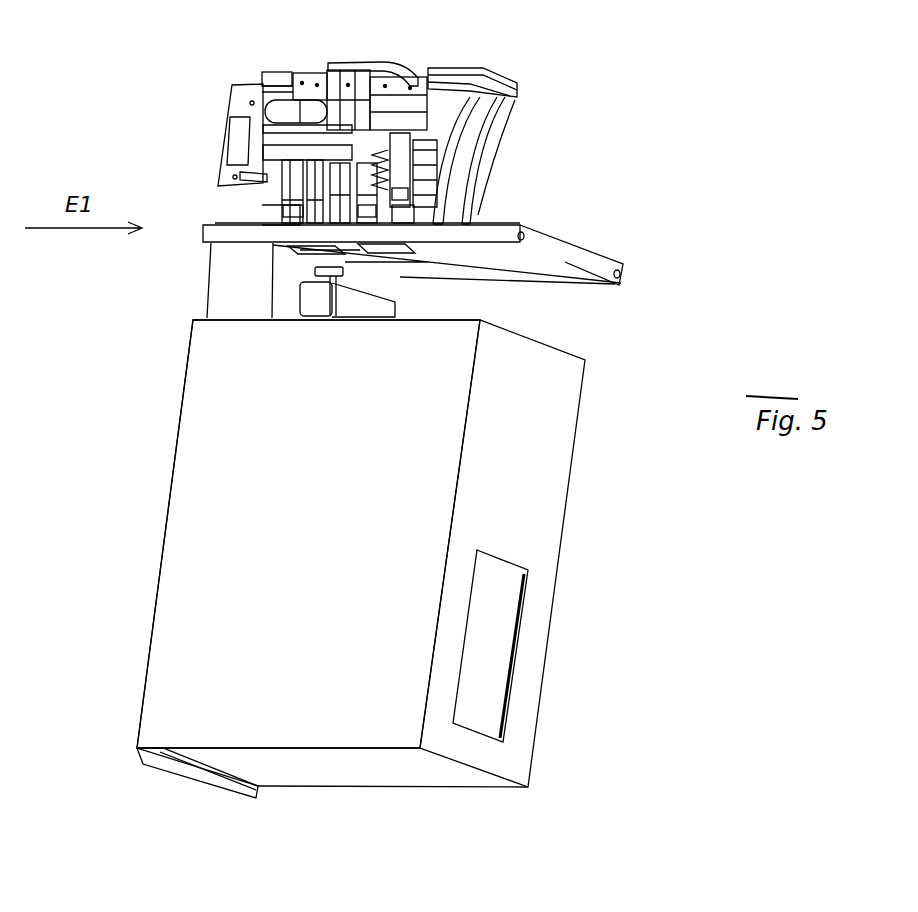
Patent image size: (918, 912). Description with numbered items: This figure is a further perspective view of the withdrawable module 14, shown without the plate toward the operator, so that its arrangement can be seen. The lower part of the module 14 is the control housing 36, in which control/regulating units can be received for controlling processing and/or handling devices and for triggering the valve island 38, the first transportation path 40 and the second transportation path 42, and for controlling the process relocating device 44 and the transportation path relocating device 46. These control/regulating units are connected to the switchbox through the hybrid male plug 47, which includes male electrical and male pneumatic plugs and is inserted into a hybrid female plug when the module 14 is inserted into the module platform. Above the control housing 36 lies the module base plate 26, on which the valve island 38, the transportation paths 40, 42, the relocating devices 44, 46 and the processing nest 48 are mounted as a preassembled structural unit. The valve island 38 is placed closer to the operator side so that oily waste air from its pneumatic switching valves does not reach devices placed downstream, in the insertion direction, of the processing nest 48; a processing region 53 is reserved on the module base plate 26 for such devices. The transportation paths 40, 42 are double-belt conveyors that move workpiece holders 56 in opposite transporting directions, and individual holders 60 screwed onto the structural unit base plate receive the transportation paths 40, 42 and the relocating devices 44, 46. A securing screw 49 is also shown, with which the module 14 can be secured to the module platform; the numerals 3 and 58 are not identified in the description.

The device 3 is at (128, 560).
The withdrawable module 14 is at (545, 497).
The module base plate 26 is at (597, 260).
The control housing 36 is at (314, 562).
The valve island 38 is at (240, 100).
The first transportation path 40 is at (352, 88).
The second transportation path 42 is at (285, 73).
The process relocating device 44 is at (420, 182).
The transportation path relocating device 46 is at (322, 187).
The hybrid male plug 47 is at (373, 313).
The processing nest 48 is at (467, 132).
The securing screw 49 is at (275, 247).
The processing region 53 is at (562, 228).
The workpiece holders 56 is at (393, 75).
The rail plate 58 is at (517, 87).
The individual holders 60 is at (277, 213).